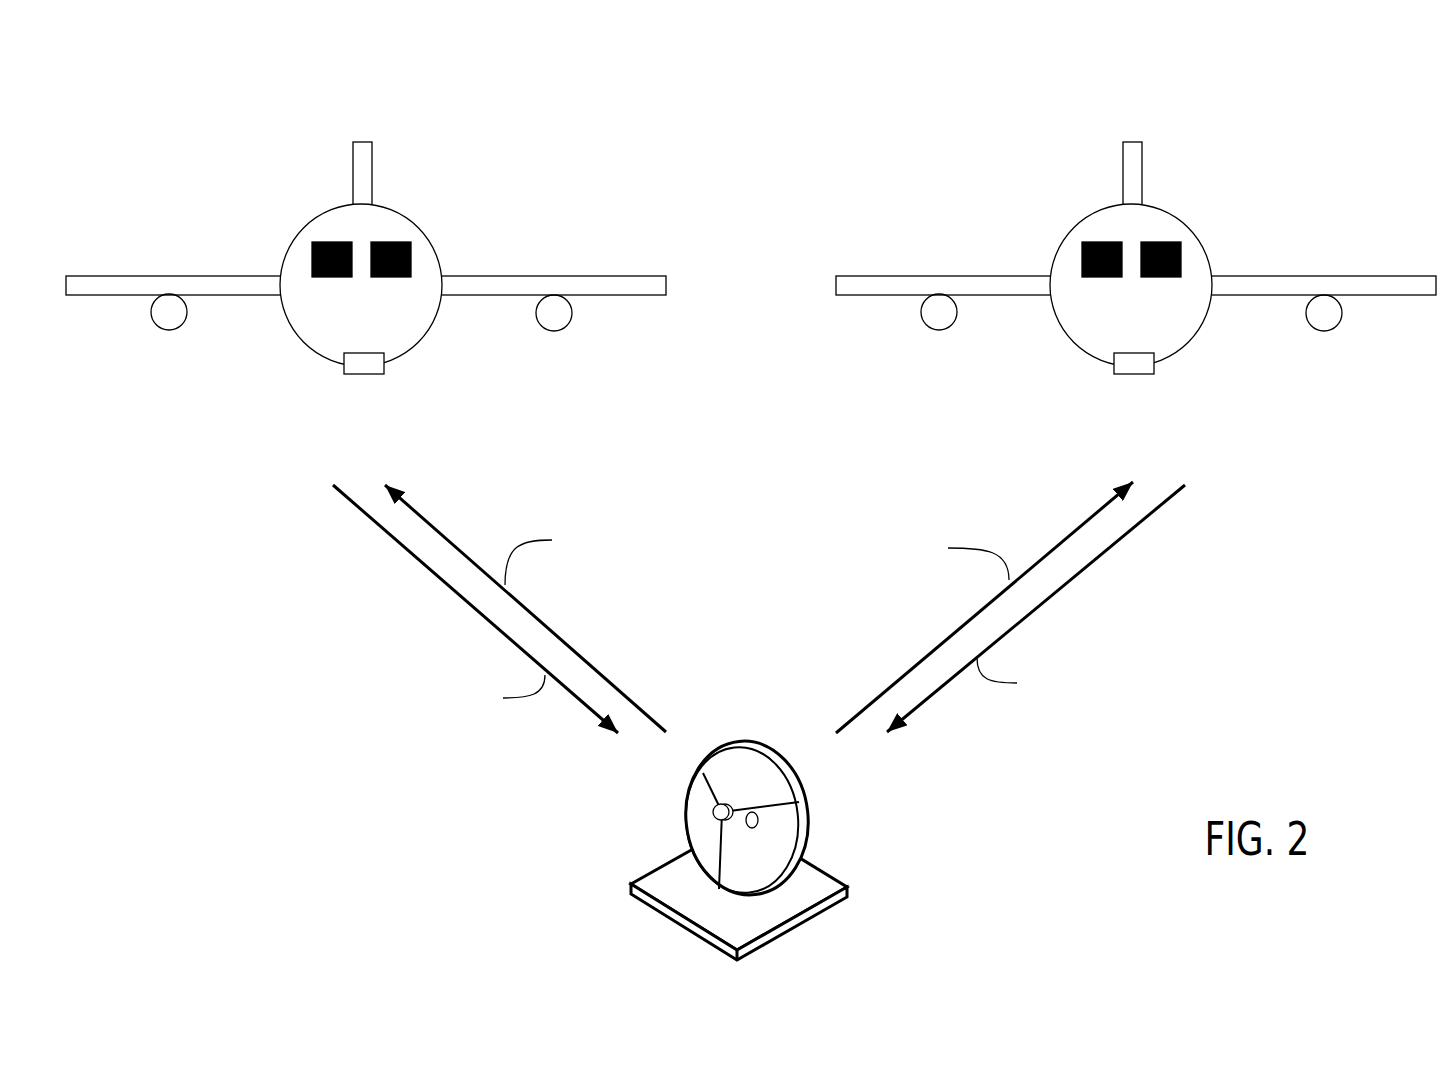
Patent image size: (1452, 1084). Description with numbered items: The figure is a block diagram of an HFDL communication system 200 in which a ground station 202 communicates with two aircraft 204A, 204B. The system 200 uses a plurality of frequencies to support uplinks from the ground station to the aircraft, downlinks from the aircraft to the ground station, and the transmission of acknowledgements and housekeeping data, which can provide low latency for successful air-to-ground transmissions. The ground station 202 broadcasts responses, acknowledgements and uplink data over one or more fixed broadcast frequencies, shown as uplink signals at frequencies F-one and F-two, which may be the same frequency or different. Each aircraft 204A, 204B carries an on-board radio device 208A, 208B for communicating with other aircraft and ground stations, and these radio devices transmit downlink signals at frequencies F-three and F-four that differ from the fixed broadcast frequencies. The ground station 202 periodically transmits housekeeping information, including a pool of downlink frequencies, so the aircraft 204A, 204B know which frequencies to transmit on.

The HFDL communication system 200 is at (751, 501).
The ground station 202 is at (807, 813).
The aircraft 204A is at (308, 219).
The aircraft 204B is at (1078, 219).
The radio device 208A is at (367, 374).
The radio device 208B is at (1137, 374).